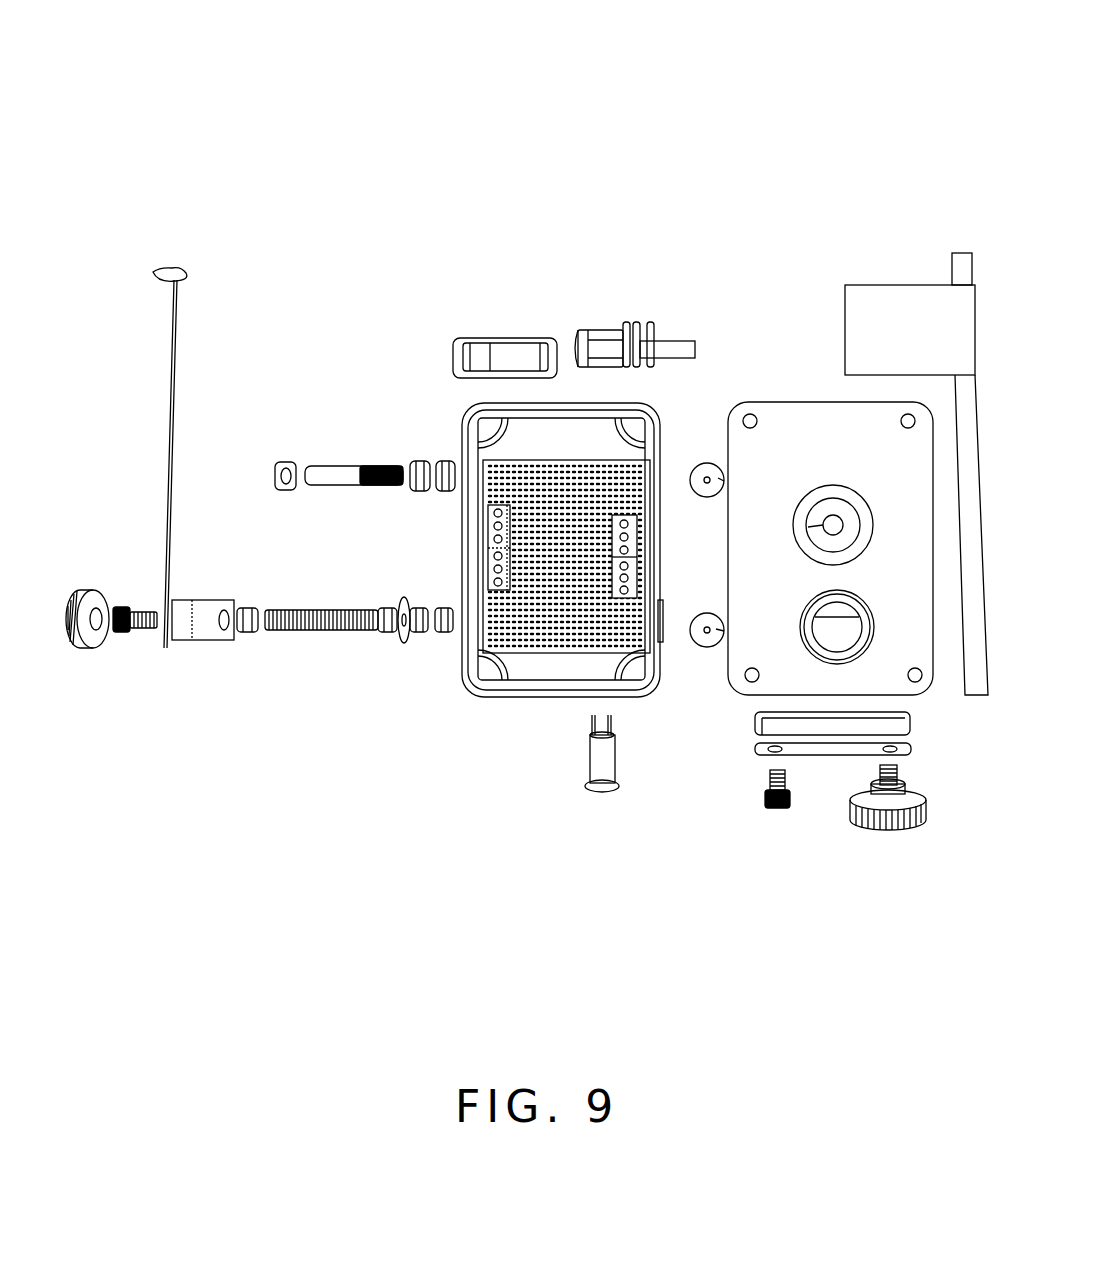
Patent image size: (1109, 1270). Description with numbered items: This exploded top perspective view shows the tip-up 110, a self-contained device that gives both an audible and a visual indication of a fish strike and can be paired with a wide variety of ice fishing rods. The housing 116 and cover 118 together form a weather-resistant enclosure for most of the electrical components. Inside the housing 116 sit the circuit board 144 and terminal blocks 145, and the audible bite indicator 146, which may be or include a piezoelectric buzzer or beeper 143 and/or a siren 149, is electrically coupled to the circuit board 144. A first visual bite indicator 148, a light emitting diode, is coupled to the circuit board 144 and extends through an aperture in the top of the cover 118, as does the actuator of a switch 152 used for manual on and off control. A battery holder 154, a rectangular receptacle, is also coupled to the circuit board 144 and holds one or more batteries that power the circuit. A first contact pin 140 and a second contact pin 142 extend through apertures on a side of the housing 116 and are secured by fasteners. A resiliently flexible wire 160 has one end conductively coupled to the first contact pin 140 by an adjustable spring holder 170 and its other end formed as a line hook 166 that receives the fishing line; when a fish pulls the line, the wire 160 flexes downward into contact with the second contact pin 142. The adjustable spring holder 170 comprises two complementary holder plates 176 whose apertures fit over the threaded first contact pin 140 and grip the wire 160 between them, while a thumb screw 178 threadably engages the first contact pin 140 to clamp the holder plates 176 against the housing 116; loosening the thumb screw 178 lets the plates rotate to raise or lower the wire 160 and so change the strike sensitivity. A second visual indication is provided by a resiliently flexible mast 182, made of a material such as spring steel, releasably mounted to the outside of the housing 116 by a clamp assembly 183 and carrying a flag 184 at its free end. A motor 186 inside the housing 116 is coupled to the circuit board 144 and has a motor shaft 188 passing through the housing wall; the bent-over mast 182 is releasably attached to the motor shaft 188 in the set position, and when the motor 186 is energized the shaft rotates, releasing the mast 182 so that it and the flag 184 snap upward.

The tip-up 110 is at (852, 48).
The housing 116 is at (651, 418).
The cover 118 is at (815, 420).
The first contact pin 140 is at (308, 608).
The second contact pin 142 is at (350, 462).
The piezoelectric buzzer or beeper 143 is at (705, 612).
The circuit board 144 is at (505, 625).
The terminal blocks 145 is at (495, 538).
The audible bite indicator 146 is at (700, 672).
The first visual bite indicator 148 is at (836, 507).
The siren 149 is at (595, 768).
The switch 152 is at (843, 622).
The battery holder 154 is at (500, 336).
The wire 160 is at (183, 362).
The line hook 166 is at (164, 268).
The adjustable spring holder 170 is at (320, 680).
The holder plates 176 is at (203, 598).
The thumb screw 178 is at (95, 650).
The mast 182 is at (964, 253).
The clamp assembly 183 is at (805, 828).
The flag 184 is at (885, 295).
The motor 186 is at (607, 330).
The motor shaft 188 is at (684, 335).